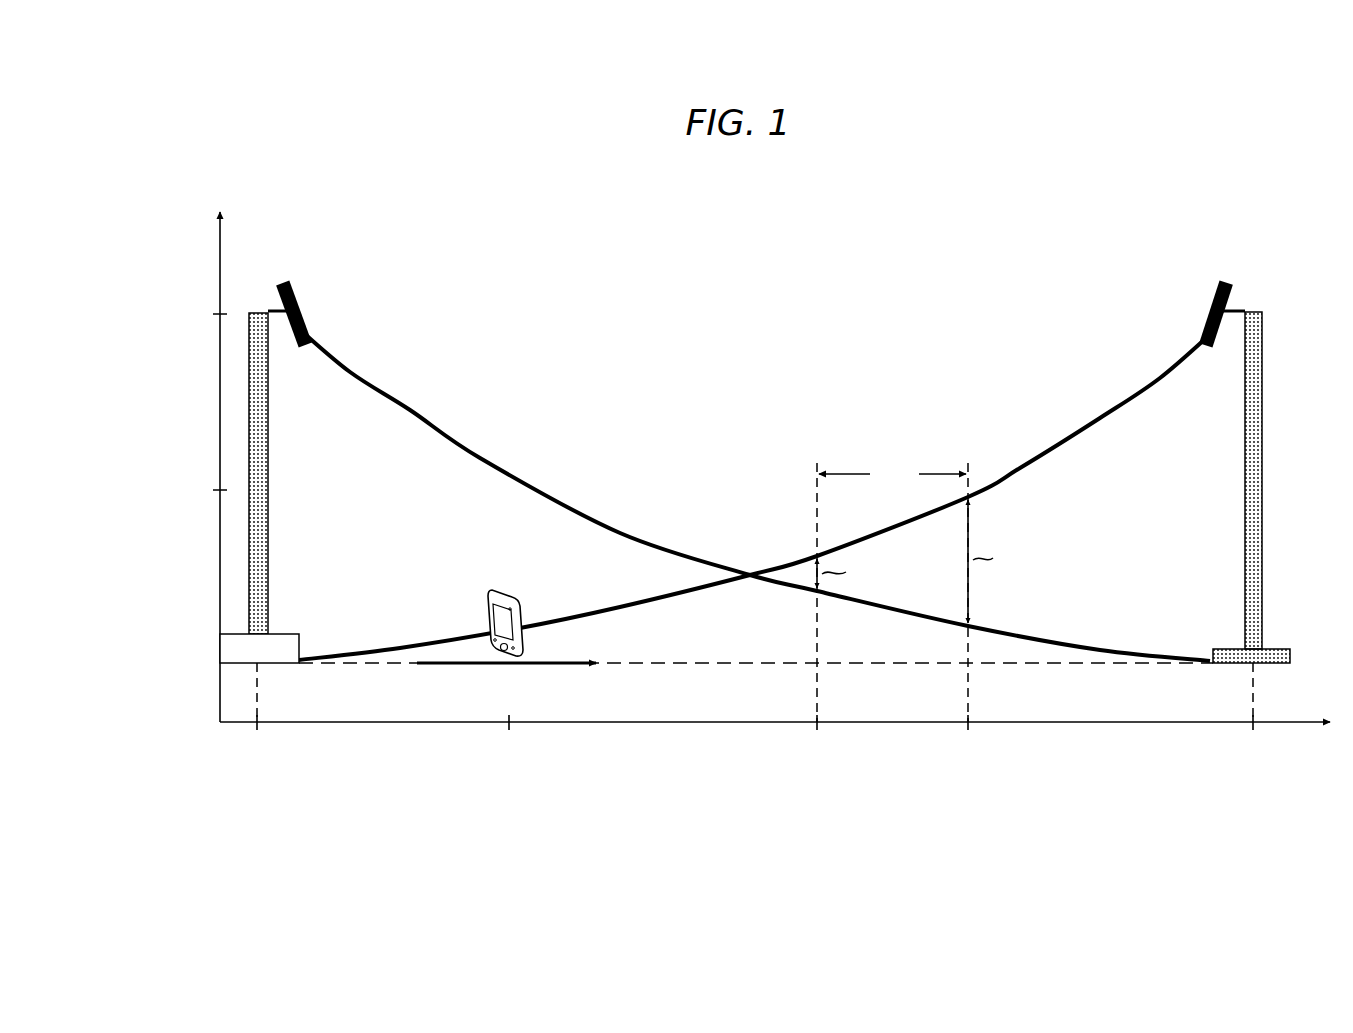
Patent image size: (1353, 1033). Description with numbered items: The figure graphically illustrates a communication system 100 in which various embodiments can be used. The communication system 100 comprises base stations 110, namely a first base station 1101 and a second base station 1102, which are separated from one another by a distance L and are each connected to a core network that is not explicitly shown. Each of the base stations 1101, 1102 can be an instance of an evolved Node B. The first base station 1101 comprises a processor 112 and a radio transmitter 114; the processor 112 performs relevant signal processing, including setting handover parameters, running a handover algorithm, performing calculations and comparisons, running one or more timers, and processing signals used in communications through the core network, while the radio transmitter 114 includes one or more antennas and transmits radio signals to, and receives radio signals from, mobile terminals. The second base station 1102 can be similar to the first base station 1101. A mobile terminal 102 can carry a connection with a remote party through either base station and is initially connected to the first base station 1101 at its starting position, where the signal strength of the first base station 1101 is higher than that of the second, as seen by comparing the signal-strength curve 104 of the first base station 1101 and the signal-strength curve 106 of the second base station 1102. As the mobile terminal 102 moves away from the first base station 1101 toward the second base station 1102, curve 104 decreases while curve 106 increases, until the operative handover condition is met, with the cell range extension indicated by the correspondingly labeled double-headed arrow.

The communication system 100 is at (680, 238).
The mobile terminal 102 is at (514, 597).
The signal-strength curve 104 is at (410, 412).
The signal-strength curve 106 is at (1103, 421).
The base stations 110 is at (769, 460).
The first base station 1101 is at (332, 445).
The second base station 1102 is at (1206, 471).
The processor 112 is at (284, 634).
The radio transmitter 114 is at (311, 296).